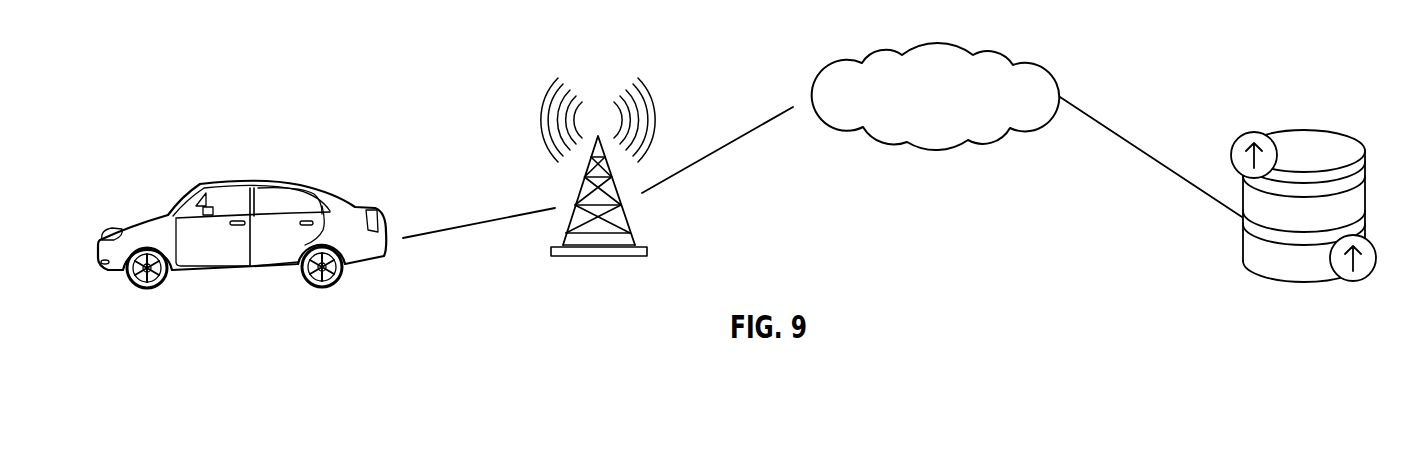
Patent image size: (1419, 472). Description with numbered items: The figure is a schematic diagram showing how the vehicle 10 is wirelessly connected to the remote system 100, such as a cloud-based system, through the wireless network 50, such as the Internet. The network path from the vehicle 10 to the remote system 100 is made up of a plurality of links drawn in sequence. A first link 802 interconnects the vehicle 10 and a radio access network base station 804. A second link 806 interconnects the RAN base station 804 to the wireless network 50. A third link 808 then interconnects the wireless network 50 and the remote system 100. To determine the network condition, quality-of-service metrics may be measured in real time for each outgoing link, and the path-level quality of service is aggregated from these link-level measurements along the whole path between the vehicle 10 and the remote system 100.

The vehicle 10 is at (272, 183).
The first link 802 is at (478, 223).
The radio access network base station 804 is at (623, 257).
The second link 806 is at (718, 152).
The wireless network 50 is at (988, 52).
The third link 808 is at (1150, 152).
The remote system 100 is at (1340, 128).